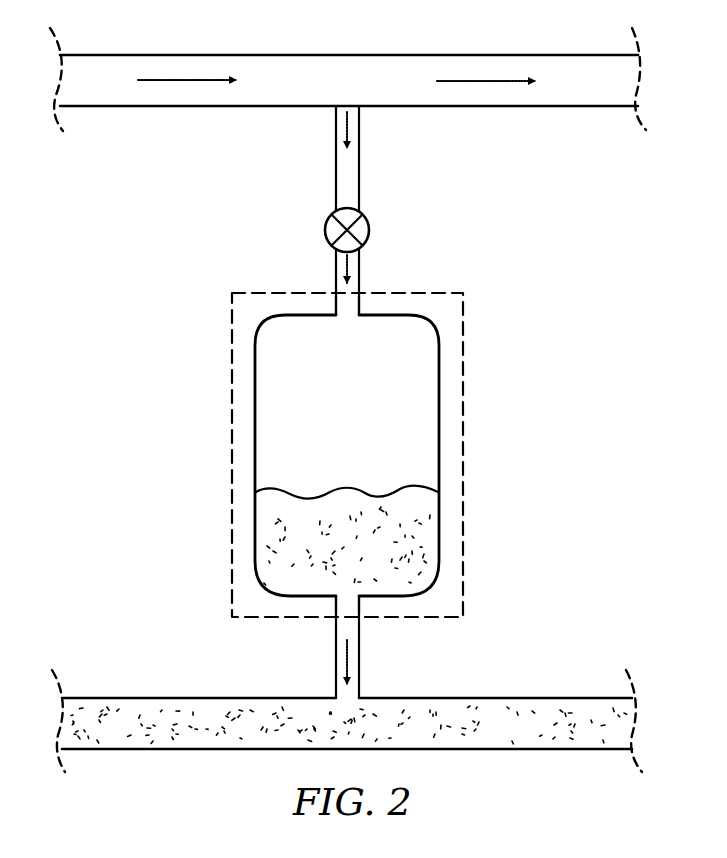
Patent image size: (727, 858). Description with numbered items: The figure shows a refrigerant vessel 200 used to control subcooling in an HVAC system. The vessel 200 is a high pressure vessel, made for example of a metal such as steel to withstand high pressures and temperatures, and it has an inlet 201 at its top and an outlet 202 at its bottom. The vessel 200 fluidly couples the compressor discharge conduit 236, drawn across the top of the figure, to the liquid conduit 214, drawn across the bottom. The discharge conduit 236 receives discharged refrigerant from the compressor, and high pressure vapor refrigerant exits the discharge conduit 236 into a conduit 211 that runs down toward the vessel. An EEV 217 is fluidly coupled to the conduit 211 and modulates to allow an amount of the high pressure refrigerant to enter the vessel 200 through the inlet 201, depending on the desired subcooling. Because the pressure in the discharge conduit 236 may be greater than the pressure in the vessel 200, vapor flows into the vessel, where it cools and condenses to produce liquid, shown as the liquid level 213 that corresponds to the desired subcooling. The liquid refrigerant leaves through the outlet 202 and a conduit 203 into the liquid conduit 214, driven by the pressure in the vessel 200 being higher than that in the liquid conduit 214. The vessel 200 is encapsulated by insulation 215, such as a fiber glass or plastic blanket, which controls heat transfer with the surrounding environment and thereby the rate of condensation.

The compressor discharge conduit 236 is at (165, 107).
The conduit 211 is at (358, 152).
The EEV 217 is at (370, 228).
The insulation 215 is at (463, 318).
The refrigerant vessel 200 is at (440, 415).
The inlet 201 is at (348, 313).
The liquid level 213 is at (425, 511).
The outlet 202 is at (345, 598).
The conduit 203 is at (360, 642).
The liquid conduit 214 is at (185, 698).